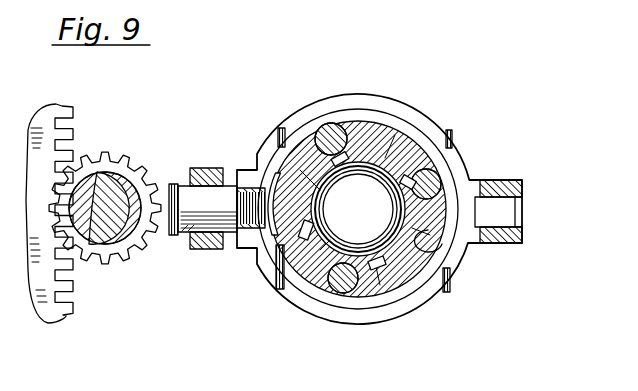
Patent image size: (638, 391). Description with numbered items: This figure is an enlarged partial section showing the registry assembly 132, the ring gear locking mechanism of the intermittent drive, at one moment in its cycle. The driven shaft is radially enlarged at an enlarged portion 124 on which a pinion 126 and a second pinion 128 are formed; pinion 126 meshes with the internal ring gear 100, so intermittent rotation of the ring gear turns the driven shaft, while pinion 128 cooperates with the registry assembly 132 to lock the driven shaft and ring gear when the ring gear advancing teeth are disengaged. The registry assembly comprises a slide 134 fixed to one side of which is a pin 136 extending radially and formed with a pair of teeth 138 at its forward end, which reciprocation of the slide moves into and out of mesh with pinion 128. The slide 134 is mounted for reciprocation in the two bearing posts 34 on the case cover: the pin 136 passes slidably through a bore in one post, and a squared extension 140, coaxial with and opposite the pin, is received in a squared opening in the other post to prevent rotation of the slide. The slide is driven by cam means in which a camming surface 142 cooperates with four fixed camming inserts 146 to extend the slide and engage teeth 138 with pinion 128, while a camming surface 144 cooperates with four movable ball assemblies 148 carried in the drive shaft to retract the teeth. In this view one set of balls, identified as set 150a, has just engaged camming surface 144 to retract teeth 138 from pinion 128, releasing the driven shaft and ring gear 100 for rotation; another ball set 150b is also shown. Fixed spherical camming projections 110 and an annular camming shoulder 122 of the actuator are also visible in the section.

The internal ring gear 100 is at (46, 121).
The pinion 126 is at (87, 160).
The enlarged portion of the driven shaft 124 is at (108, 214).
The pinion 128 is at (127, 262).
The teeth 138 is at (170, 184).
The pin 136 is at (181, 233).
The bearing posts 34 is at (215, 240).
The registry assembly 132 is at (412, 196).
The squared extension 140 is at (505, 208).
The slide 134 is at (419, 298).
The movable ball assemblies 148 is at (352, 297).
The camming projections 110 is at (331, 123).
The camming surface 144 is at (447, 247).
The roller 150b is at (340, 293).
The set of balls 150a is at (446, 285).
The camming surface 142 is at (275, 243).
The fixed camming inserts 146 is at (289, 292).
The annular camming shoulder 122 is at (358, 209).